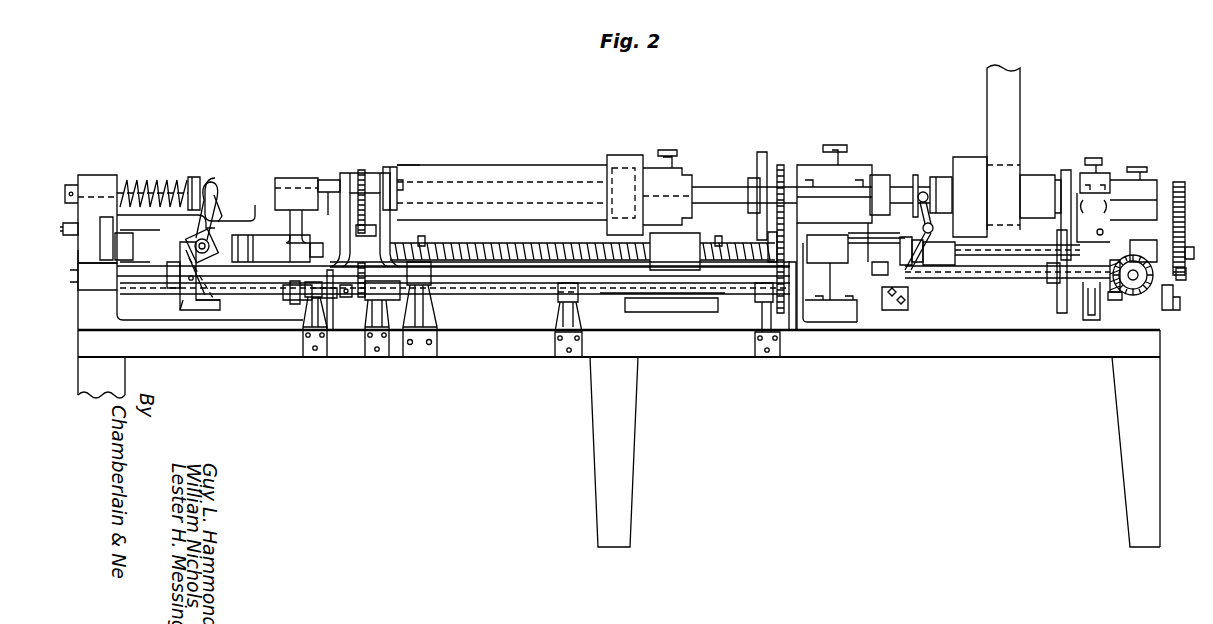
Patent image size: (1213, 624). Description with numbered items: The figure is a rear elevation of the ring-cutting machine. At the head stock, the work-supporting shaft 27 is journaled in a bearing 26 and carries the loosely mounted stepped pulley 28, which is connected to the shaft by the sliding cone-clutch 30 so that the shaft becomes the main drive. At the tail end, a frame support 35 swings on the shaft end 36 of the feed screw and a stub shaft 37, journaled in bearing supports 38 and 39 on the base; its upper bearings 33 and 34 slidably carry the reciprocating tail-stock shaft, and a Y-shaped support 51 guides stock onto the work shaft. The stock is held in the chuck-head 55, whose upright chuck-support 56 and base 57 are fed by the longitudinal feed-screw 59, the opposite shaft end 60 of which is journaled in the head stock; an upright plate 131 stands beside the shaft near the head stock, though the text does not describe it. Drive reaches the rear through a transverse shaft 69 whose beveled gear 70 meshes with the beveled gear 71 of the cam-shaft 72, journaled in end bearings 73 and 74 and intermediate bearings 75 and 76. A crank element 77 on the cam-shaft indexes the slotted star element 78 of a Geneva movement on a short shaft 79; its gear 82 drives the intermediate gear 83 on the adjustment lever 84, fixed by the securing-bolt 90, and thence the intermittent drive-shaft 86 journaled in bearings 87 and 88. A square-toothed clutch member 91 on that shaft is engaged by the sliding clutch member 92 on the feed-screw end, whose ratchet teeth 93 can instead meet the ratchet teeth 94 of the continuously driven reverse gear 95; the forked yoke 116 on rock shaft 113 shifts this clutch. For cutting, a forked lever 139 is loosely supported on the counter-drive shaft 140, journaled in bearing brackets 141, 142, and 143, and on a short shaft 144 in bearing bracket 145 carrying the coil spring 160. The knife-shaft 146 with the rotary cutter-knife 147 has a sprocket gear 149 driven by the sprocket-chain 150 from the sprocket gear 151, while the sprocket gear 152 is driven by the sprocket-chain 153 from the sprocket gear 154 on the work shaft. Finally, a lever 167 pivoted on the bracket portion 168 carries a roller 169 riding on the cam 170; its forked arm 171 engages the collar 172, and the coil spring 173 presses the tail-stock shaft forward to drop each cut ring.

The bearing 26 is at (812, 165).
The work-supporting shaft 27 is at (716, 196).
The stepped pulley 28 is at (972, 165).
The sliding cone-clutch 30 is at (916, 177).
The bearing 33 is at (290, 180).
The bearing 34 is at (98, 177).
The frame support 35 is at (145, 246).
The shaft end 36 is at (315, 178).
The stub shaft 37 is at (133, 243).
The bearing support 38 is at (271, 249).
The bearing support 39 is at (120, 262).
The Y-shaped support 51 is at (72, 222).
The chuck-head 55 is at (672, 175).
The upright chuck-support 56 is at (675, 251).
The base 57 is at (670, 312).
The longitudinal feed-screw 59 is at (560, 242).
The shaft end 60 is at (793, 290).
The transverse shaft 69 is at (1133, 295).
The beveled gear 70 is at (1115, 292).
The beveled gear 71 is at (1118, 300).
The cam-shaft 72 is at (997, 280).
The end bearing 73 is at (1092, 322).
The end bearing 74 is at (99, 285).
The intermediate bearing 75 is at (830, 300).
The intermediate bearing 76 is at (427, 276).
The crank element 77 is at (1057, 290).
The slotted star element 78 is at (1066, 170).
The short shaft 79 is at (1118, 208).
The gear 82 is at (1178, 182).
The intermediate gear 83 is at (1190, 259).
The adjustment lever 84 is at (1181, 280).
The intermittent drive-shaft 86 is at (1003, 250).
The bearing 87 is at (1145, 240).
The bearing 88 is at (940, 265).
The securing-bolt 90 is at (1167, 310).
The square-toothed clutch member 91 is at (918, 262).
The clutch member 92 is at (908, 265).
The ratchet teeth 93 is at (918, 231).
The ratchet teeth 94 is at (879, 275).
The gear 95 is at (880, 177).
The rock shaft 113 is at (886, 307).
The forked yoke 116 is at (827, 249).
The plate 131 is at (760, 160).
The forked lever 139 is at (348, 195).
The counter-drive shaft 140 is at (517, 294).
The bearing bracket 141 is at (757, 300).
The bearing bracket 142 is at (562, 325).
The bearing bracket 143 is at (377, 357).
The short shaft 144 is at (327, 305).
The bearing bracket 145 is at (318, 357).
The knife-shaft 146 is at (366, 178).
The rotary cutter-knife 147 is at (400, 166).
The sprocket gear 149 is at (395, 160).
The sprocket-chain 150 is at (375, 228).
The sprocket gear 151 is at (361, 300).
The sprocket gear 152 is at (762, 332).
The sprocket-chain 153 is at (768, 238).
The sprocket gear 154 is at (781, 165).
The coil spring 160 is at (285, 290).
The lever 167 is at (212, 285).
The bracket portion 168 is at (218, 258).
The roller 169 is at (184, 300).
The cam 170 is at (200, 308).
The forked arm 171 is at (215, 205).
The collar 172 is at (201, 182).
The coil spring 173 is at (158, 179).